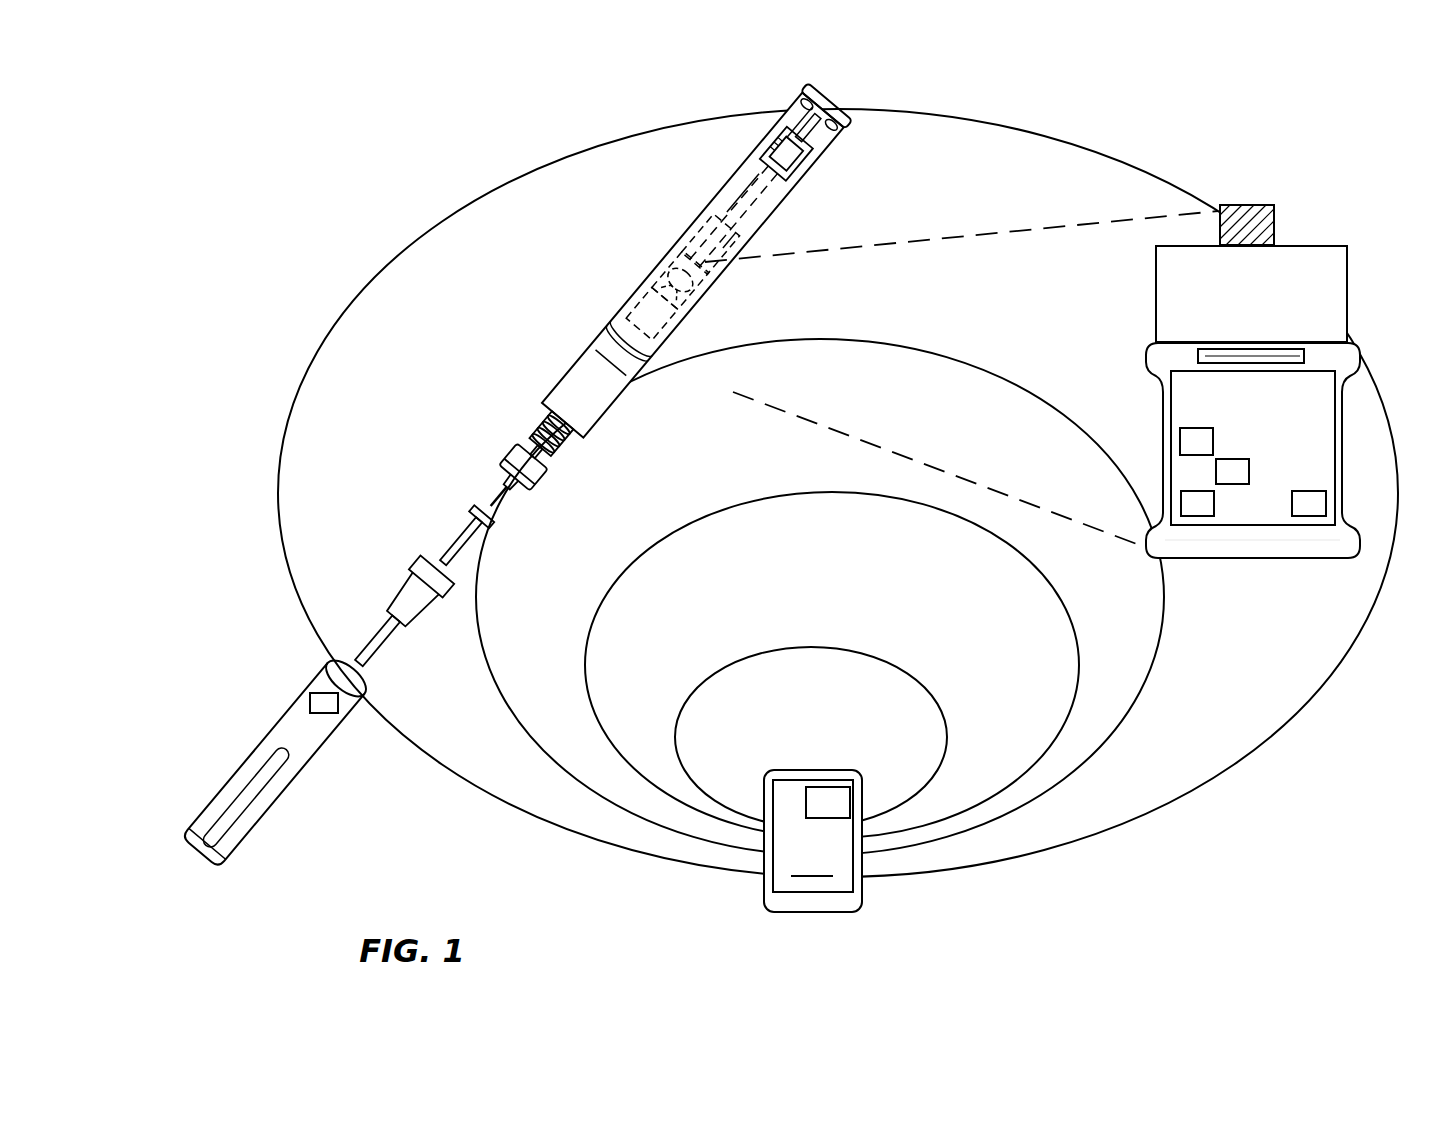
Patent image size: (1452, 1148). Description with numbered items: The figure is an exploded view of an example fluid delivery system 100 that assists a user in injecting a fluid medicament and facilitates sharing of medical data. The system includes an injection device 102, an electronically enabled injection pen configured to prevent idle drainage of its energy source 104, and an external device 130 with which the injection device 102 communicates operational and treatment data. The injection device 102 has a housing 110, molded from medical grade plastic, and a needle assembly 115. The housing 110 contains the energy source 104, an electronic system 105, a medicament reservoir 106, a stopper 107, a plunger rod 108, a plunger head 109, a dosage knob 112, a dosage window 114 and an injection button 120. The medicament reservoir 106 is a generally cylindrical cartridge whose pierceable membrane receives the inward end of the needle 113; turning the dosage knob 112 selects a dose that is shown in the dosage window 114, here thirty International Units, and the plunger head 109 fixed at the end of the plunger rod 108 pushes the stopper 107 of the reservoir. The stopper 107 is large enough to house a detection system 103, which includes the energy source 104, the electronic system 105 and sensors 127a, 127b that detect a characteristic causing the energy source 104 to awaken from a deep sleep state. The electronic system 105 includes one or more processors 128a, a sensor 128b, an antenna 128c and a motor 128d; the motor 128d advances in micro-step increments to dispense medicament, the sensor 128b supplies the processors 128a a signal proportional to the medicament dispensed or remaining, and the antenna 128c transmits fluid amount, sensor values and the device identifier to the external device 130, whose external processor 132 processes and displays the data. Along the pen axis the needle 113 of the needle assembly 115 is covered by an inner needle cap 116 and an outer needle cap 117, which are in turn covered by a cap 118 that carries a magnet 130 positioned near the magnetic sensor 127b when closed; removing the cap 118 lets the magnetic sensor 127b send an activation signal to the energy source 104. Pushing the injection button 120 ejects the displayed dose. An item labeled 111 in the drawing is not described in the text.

The fluid delivery system 100 is at (341, 185).
The injection device 102 is at (712, 188).
The detection system 103 is at (1150, 427).
The energy source 104 is at (707, 287).
The electronic system 105 is at (673, 260).
The medicament reservoir 106 is at (560, 404).
The stopper 107 is at (637, 307).
The plunger rod 108 is at (750, 210).
The plunger head 109 is at (677, 265).
The housing 110 is at (703, 237).
The dose mechanism 111 is at (678, 258).
The dosage knob 112 is at (804, 90).
The needle 113 is at (488, 500).
The dosage window 114 is at (796, 160).
The needle assembly 115 is at (521, 448).
The inner needle cap 116 is at (464, 530).
The outer needle cap 117 is at (390, 604).
The cap 118 is at (217, 807).
The injection button 120 is at (850, 88).
The sensor 127a is at (1200, 357).
The magnetic sensor 127b is at (1160, 553).
The processor 128a is at (1190, 443).
The sensor 128b is at (1228, 470).
The antenna 128c is at (1200, 502).
The motor 128d is at (1315, 502).
The external device 130 is at (310, 702).
The external processor 132 is at (830, 797).